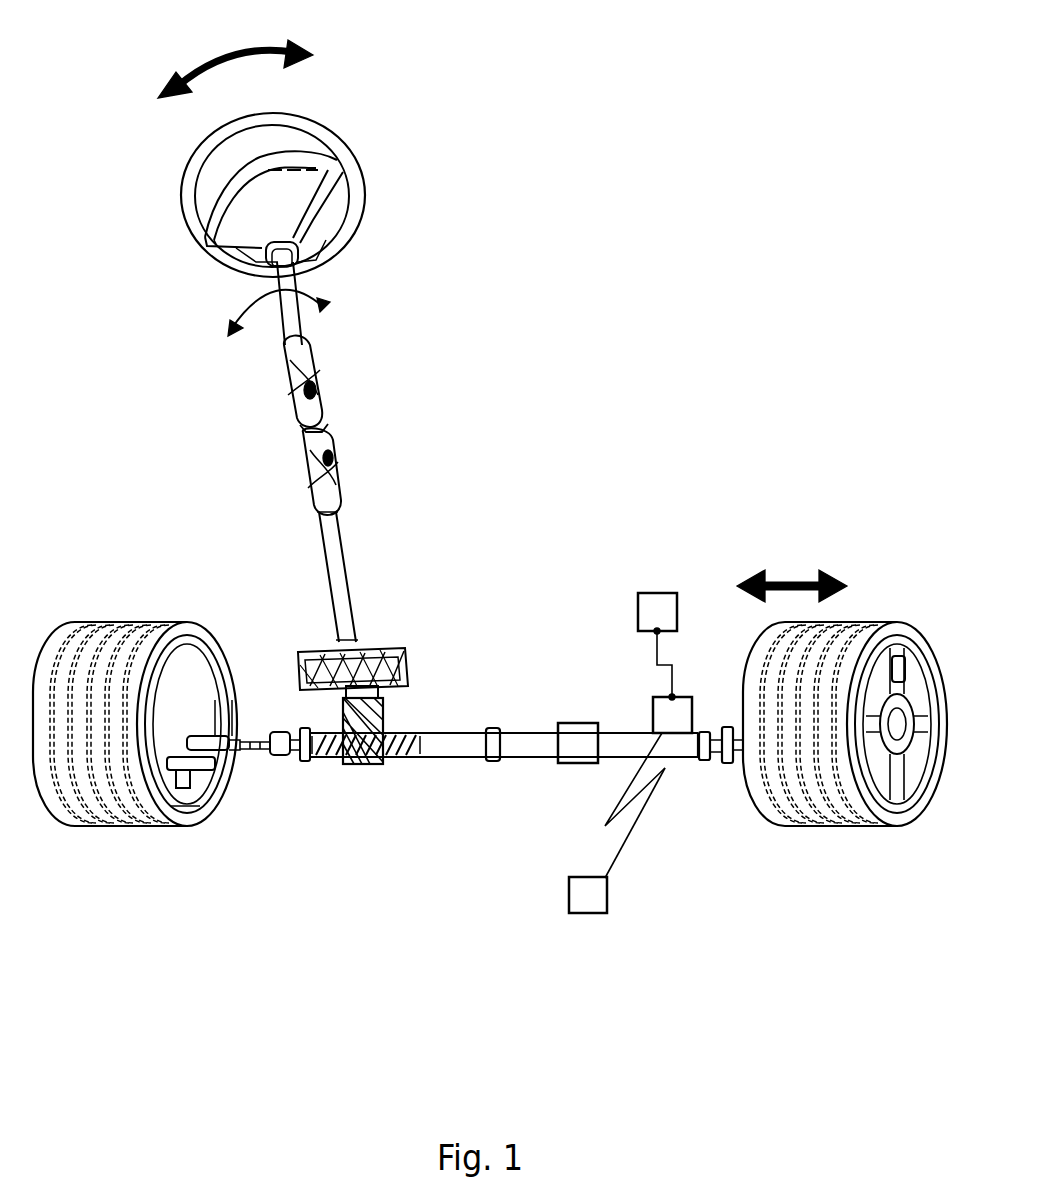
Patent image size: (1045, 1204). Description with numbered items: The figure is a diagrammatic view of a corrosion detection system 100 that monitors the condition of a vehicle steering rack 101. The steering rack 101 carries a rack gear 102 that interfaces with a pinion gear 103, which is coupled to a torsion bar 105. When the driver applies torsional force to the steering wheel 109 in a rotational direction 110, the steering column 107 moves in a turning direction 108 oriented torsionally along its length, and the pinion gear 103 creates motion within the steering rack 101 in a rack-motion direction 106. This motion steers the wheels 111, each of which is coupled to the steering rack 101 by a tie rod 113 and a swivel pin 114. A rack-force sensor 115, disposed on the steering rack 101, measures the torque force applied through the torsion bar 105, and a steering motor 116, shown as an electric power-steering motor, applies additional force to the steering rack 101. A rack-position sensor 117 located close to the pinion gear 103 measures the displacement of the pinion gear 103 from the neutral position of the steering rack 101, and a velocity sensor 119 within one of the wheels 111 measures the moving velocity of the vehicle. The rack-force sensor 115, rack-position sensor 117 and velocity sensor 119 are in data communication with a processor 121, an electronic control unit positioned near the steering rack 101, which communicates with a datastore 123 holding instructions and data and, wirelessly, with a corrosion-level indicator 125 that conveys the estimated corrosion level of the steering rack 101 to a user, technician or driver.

The corrosion detection system 100 is at (700, 175).
The steering rack 101 is at (529, 732).
The rack gear 102 is at (403, 758).
The pinion gear 103 is at (381, 723).
The torsion bar 105 is at (406, 660).
The rack-motion direction 106 is at (803, 581).
The steering column 107 is at (331, 440).
The turning direction 108 is at (333, 297).
The steering wheel 109 is at (362, 172).
The rotational direction 110 is at (229, 57).
The wheels 111 is at (144, 624).
The tie rod 113 is at (215, 749).
The swivel pin 114 is at (197, 772).
The rack-force sensor 115 is at (495, 758).
The steering motor 116 is at (578, 723).
The rack-position sensor 117 is at (345, 691).
The velocity sensor 119 is at (905, 655).
The processor 121 is at (653, 710).
The datastore 123 is at (638, 608).
The corrosion-level indicator 125 is at (569, 892).